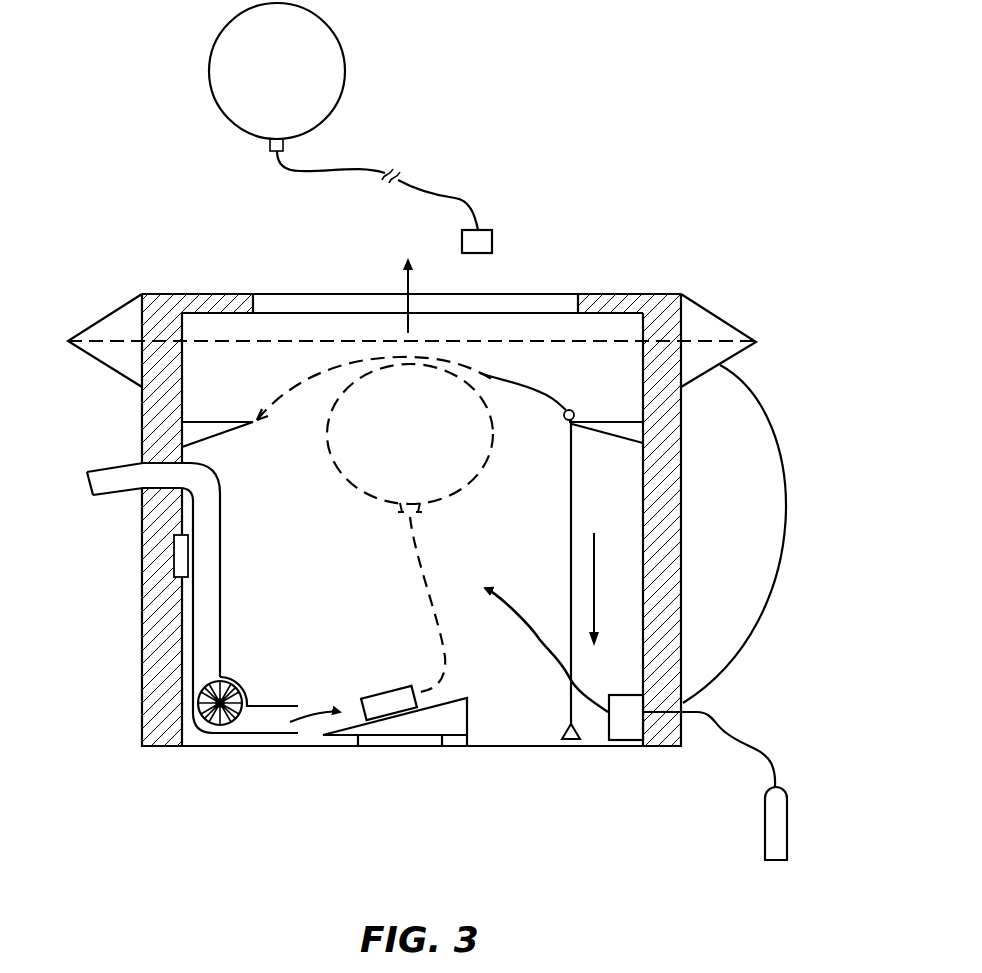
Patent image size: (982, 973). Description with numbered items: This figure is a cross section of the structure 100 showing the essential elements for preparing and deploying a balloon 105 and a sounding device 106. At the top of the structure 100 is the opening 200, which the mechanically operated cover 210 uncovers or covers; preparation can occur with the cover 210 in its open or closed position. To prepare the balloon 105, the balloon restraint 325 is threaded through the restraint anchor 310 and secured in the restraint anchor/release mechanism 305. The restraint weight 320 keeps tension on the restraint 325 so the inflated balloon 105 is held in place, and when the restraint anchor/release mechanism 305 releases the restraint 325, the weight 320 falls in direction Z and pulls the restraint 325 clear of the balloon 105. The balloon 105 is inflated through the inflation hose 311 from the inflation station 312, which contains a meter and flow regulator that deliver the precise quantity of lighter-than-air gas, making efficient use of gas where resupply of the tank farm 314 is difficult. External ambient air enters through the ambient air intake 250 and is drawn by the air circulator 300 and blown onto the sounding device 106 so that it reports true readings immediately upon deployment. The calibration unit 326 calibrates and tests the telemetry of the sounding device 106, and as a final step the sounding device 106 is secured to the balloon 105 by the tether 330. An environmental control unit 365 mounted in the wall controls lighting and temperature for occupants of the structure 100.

The structure 100 is at (142, 636).
The balloon 105 is at (323, 62).
The sounding device 106 is at (487, 240).
The opening 200 is at (293, 302).
The cover 210 is at (745, 565).
The ambient air intake 250 is at (94, 484).
The air circulator 300 is at (213, 737).
The restraint anchor/release mechanism 305 is at (253, 420).
The restraint anchor 310 is at (573, 409).
The inflation hose 311 is at (537, 640).
The inflation station 312 is at (628, 730).
The tank farm 314 is at (778, 840).
The restraint weight 320 is at (578, 743).
The balloon restraint 325 is at (570, 514).
The calibration unit 326 is at (463, 732).
The tether 330 is at (447, 193).
The environmental control unit 365 is at (178, 560).